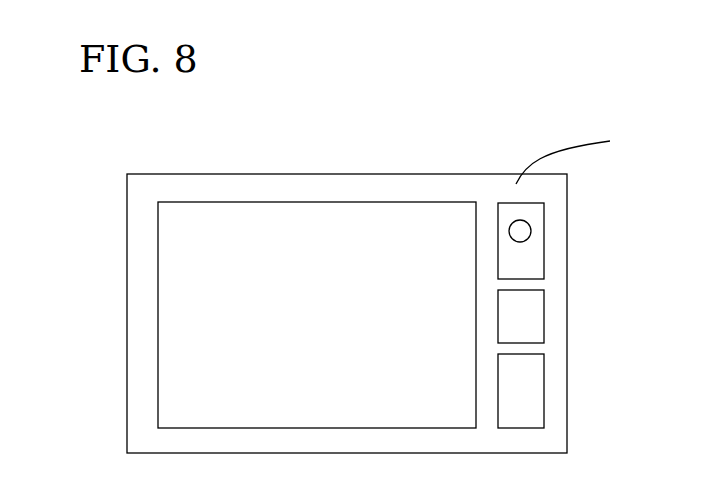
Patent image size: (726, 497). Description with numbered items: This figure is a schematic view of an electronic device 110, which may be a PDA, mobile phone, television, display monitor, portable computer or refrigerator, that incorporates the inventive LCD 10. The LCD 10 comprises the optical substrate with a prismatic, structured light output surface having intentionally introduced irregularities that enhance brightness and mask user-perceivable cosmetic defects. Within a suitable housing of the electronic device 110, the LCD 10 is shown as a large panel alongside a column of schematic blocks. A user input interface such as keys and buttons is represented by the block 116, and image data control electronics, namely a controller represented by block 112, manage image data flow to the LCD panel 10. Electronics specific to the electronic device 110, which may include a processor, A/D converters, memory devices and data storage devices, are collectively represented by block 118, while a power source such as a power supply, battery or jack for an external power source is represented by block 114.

The LCD 10 is at (409, 412).
The electronic device 110 is at (583, 157).
The controller 112 is at (530, 323).
The power source 114 is at (531, 226).
The user input interface 116 is at (530, 388).
The electronics specific to the electronic device 118 is at (529, 263).